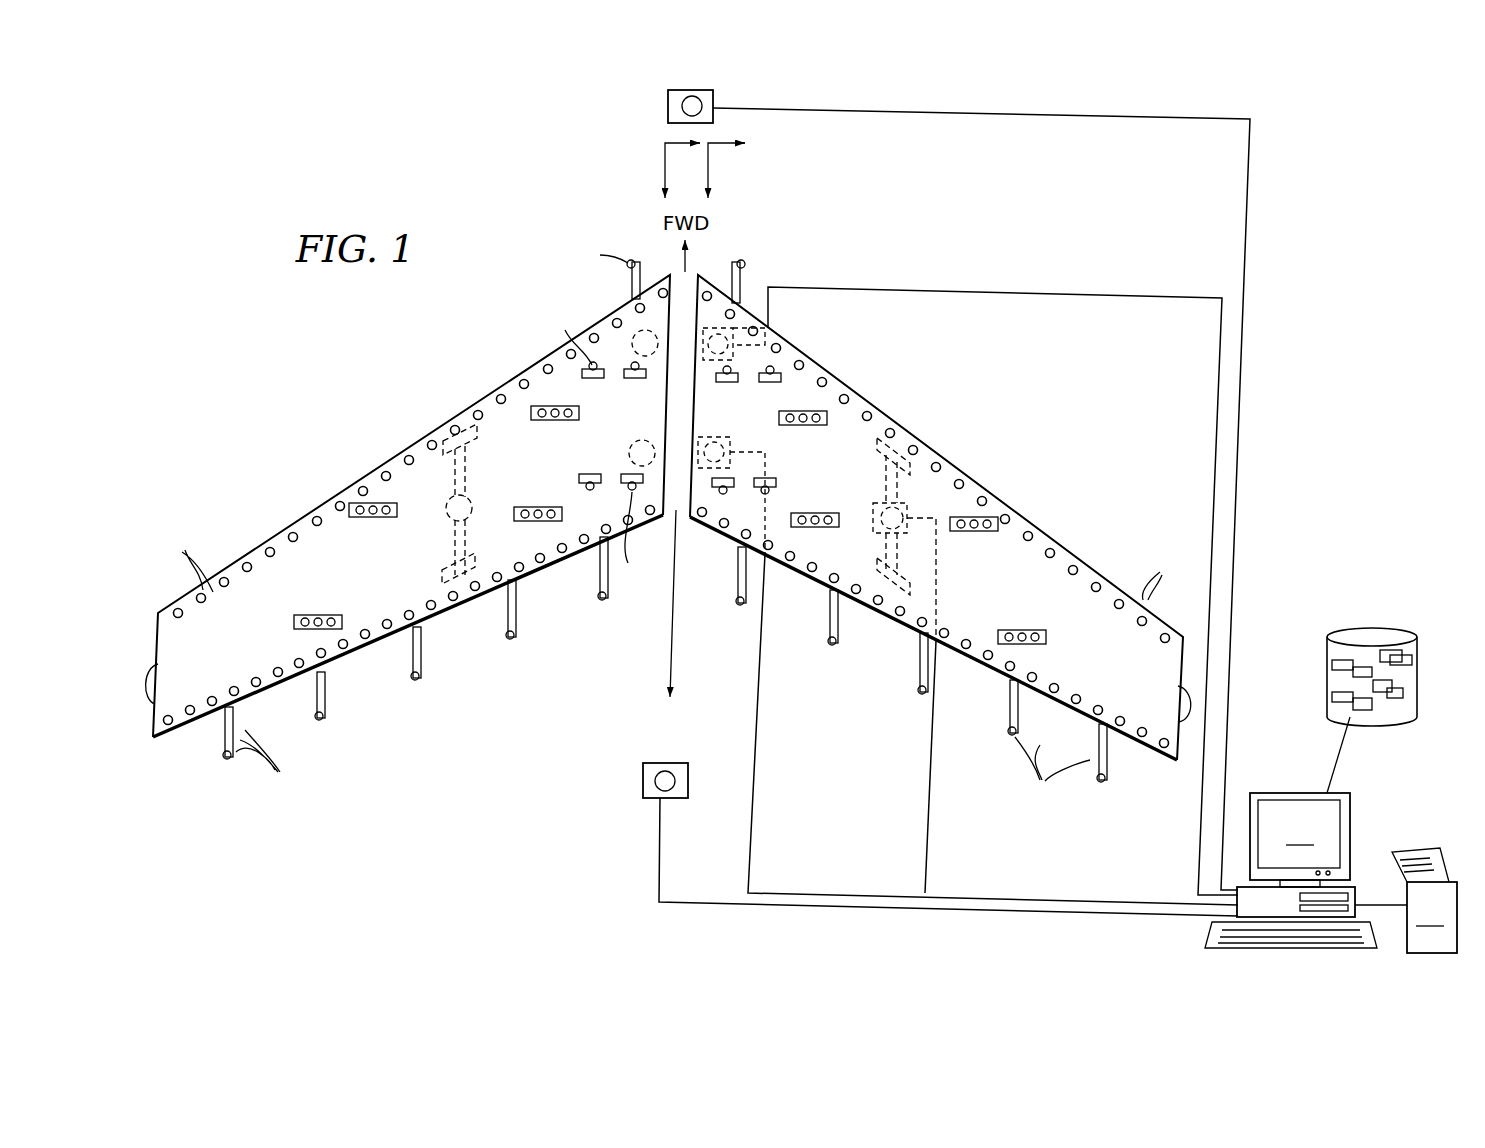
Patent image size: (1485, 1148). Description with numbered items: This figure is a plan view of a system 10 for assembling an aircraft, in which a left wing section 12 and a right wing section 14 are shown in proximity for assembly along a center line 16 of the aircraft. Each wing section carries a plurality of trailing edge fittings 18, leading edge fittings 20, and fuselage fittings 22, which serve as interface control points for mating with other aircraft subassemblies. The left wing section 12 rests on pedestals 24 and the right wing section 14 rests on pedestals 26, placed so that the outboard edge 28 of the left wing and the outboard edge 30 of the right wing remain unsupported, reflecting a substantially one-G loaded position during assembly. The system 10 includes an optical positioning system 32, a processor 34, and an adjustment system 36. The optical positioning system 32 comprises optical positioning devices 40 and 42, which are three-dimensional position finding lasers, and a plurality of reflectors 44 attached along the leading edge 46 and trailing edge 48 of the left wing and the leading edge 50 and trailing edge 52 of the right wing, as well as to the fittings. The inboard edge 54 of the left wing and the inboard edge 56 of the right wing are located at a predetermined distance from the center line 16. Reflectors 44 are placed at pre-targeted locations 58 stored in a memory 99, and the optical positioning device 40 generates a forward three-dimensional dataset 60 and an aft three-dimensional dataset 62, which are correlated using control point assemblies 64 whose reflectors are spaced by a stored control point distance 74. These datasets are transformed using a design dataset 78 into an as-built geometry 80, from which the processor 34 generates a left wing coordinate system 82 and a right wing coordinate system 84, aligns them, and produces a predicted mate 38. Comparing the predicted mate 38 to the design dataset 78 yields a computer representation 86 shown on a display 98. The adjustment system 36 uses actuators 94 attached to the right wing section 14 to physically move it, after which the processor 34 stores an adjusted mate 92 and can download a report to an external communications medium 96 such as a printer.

The system for assembling an aircraft 10 is at (372, 868).
The left wing section 12 is at (372, 447).
The right wing section 14 is at (990, 470).
The center line 16 is at (670, 650).
The trailing edge fittings 18 is at (229, 759).
The leading edge fittings 20 is at (632, 262).
The fuselage fittings 22 is at (635, 380).
The pedestals 24 is at (642, 330).
The pedestals 26 is at (722, 330).
The outboard edge 28 is at (160, 669).
The outboard edge 30 is at (1180, 690).
The optical positioning system 32 is at (620, 848).
The processor 34 is at (1425, 565).
The adjustment system 36 is at (1030, 390).
The predicted mate 38 is at (1332, 665).
The optical positioning device 40 is at (668, 105).
The optical positioning device 42 is at (643, 778).
The reflectors 44 is at (672, 521).
The leading edge 46 is at (333, 500).
The trailing edge 48 is at (458, 590).
The leading edge 50 is at (1105, 578).
The trailing edge 52 is at (878, 600).
The inboard edge 54 is at (664, 404).
The inboard edge 56 is at (695, 367).
The pre-targeted locations 58 is at (1355, 667).
The forward three-dimensional dataset 60 is at (1362, 698).
The aft three-dimensional dataset 62 is at (1403, 690).
The control point assemblies 64 is at (555, 420).
The control point distance 74 is at (1392, 650).
The design dataset 78 is at (1412, 660).
The as-built geometry 80 is at (1380, 705).
The left wing three-dimensional coordinate system 82 is at (665, 165).
The right wing three-dimensional coordinate system 84 is at (708, 165).
The computer representation 86 is at (1340, 710).
The adjusted mate 92 is at (1365, 710).
The actuators 94 is at (768, 303).
The external communications medium 96 is at (1424, 900).
The display 98 is at (1350, 800).
The memory 99 is at (1417, 645).